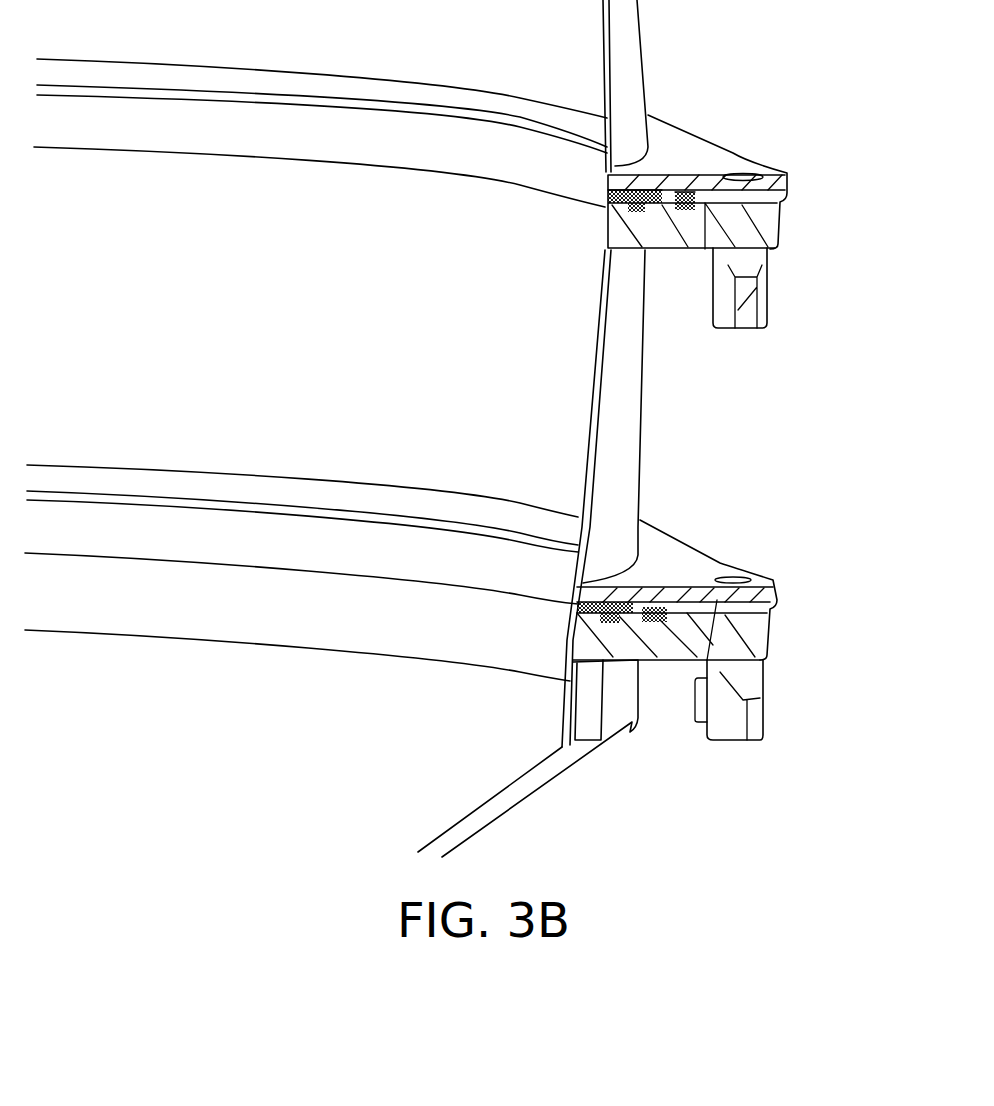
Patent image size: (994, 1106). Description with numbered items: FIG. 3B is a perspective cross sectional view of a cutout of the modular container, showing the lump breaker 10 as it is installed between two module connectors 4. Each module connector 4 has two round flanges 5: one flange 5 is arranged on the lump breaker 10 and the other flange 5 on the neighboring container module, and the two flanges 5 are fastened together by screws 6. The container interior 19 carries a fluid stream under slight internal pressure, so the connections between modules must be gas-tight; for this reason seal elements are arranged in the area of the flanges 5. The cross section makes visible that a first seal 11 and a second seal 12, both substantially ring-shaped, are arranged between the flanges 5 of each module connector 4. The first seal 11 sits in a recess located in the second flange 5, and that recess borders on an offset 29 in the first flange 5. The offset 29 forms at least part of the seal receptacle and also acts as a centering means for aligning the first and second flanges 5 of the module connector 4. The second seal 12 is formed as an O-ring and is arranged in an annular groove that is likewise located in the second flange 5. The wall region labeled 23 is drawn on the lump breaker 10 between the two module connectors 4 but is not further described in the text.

The module connector 4 is at (757, 120).
The flange 5 is at (755, 160).
The screw 6 is at (767, 320).
The lump breaker 10 is at (612, 440).
The first seal 11 is at (645, 203).
The second seal 12 is at (677, 203).
The container interior 19 is at (165, 440).
The web panel 23 is at (349, 341).
The offset 29 is at (710, 190).